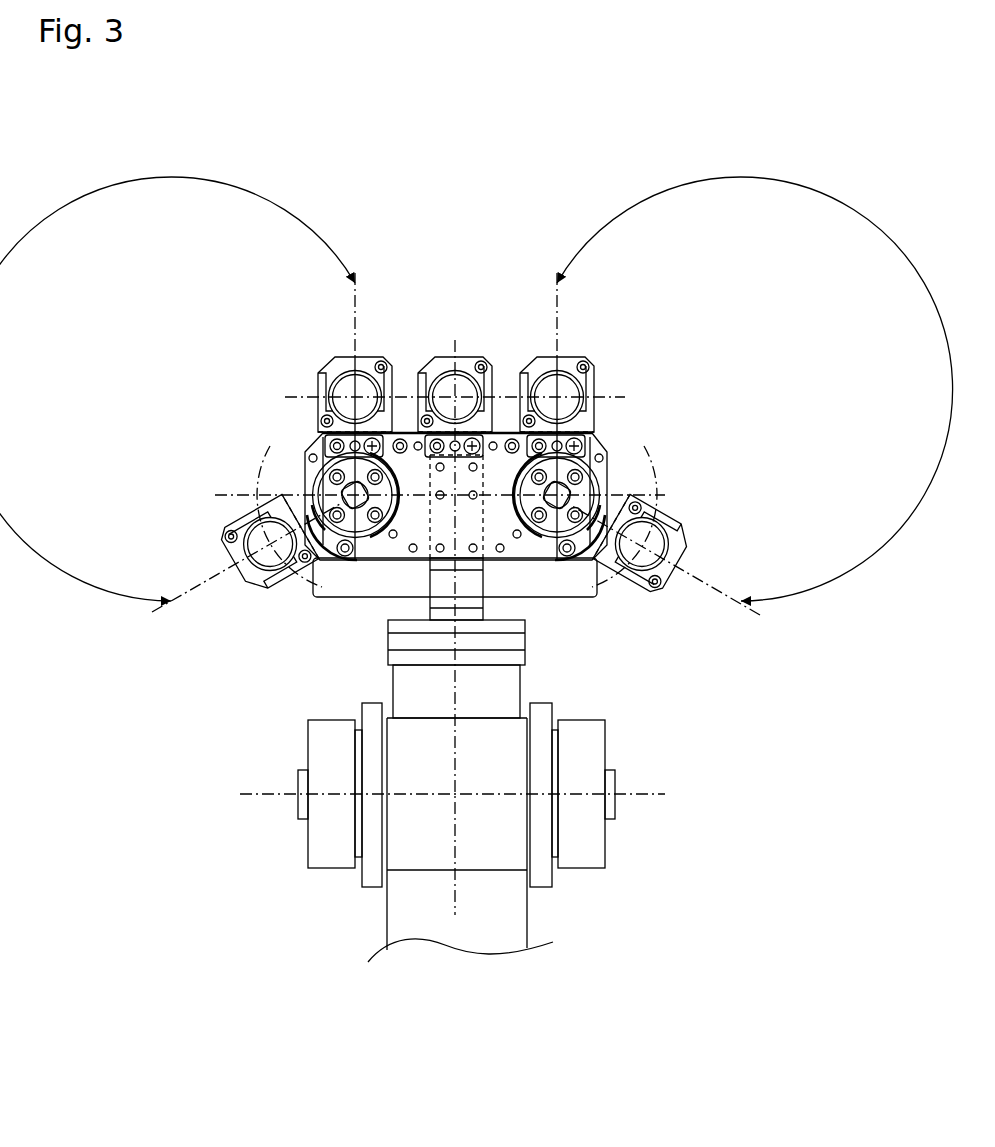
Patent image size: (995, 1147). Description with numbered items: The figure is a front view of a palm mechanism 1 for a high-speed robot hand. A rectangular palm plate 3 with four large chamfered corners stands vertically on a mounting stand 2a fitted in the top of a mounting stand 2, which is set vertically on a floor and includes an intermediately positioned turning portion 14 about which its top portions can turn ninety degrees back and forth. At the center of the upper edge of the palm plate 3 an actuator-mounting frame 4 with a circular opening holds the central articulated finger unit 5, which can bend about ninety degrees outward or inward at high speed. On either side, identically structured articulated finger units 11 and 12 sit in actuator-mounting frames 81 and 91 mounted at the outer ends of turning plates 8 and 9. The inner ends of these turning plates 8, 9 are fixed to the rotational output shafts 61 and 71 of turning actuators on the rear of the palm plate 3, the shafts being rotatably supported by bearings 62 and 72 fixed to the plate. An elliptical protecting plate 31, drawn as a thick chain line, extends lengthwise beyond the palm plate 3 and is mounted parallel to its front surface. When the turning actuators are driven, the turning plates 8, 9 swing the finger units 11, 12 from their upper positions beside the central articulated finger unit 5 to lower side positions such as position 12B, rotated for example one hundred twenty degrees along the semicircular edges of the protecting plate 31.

The palm mechanism 1 is at (660, 215).
The mounting stand 2 is at (525, 680).
The mounting stand 2a is at (465, 585).
The palm plate 3 is at (392, 543).
The actuator-mounting frame 4 is at (455, 359).
The articulated finger unit 5 is at (450, 386).
The turning plate 8 is at (592, 468).
The turning plate 9 is at (325, 468).
The articulated finger unit 11 is at (569, 390).
The articulated finger unit 12 is at (342, 390).
The lower side position 12B is at (484, 570).
The turning portion 14 is at (609, 888).
The protecting plate 31 is at (246, 590).
The rotational output shaft 61 is at (622, 482).
The bearing 62 is at (642, 503).
The rotational output shaft 71 is at (224, 546).
The bearing 72 is at (290, 500).
The actuator-mounting frame 81 is at (615, 381).
The actuator-mounting frame 91 is at (287, 383).